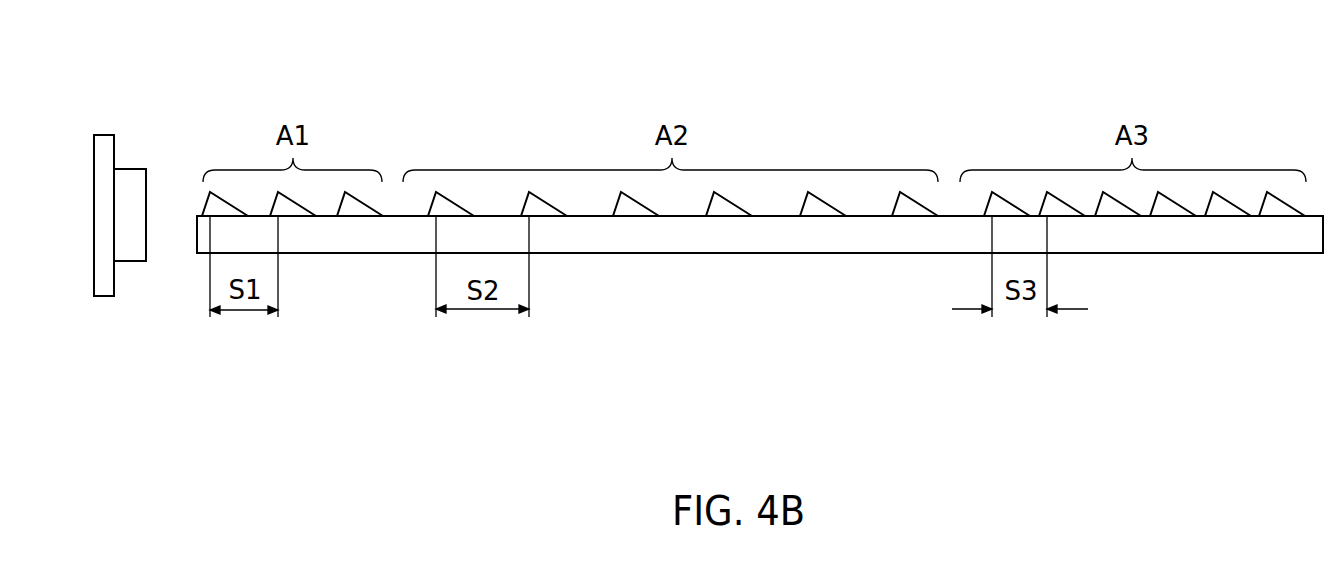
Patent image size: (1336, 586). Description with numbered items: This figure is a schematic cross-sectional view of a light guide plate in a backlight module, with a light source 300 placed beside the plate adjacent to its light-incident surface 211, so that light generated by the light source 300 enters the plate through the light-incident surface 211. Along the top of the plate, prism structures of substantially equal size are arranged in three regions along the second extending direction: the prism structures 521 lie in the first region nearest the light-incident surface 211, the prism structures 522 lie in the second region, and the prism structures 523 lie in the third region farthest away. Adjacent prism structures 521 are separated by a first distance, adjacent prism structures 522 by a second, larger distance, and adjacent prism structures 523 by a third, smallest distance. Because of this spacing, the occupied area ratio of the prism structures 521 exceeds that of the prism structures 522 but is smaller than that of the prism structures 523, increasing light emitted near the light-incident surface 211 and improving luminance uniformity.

The light source 300 is at (103, 143).
The light-incident surface 211 is at (197, 232).
The prism structures 521 is at (223, 208).
The prism structures 522 is at (445, 207).
The prism structures 523 is at (1000, 207).